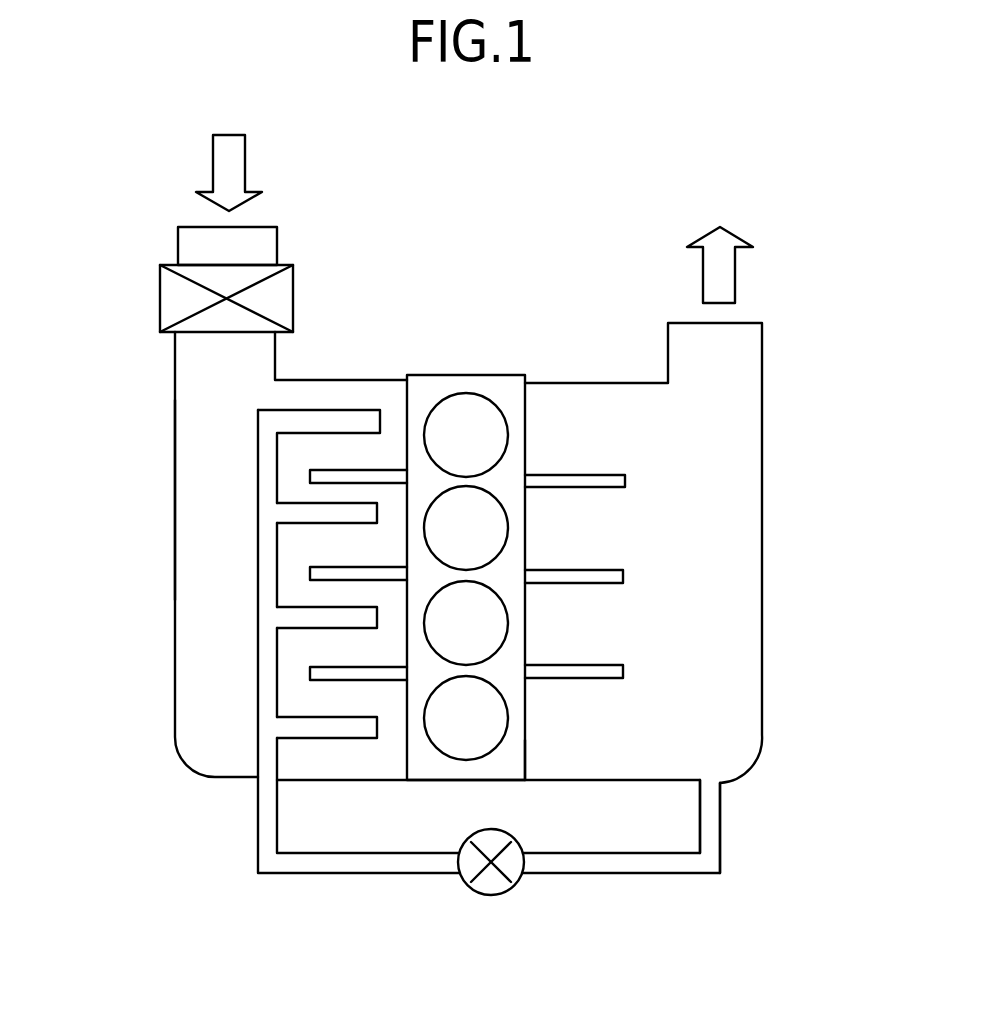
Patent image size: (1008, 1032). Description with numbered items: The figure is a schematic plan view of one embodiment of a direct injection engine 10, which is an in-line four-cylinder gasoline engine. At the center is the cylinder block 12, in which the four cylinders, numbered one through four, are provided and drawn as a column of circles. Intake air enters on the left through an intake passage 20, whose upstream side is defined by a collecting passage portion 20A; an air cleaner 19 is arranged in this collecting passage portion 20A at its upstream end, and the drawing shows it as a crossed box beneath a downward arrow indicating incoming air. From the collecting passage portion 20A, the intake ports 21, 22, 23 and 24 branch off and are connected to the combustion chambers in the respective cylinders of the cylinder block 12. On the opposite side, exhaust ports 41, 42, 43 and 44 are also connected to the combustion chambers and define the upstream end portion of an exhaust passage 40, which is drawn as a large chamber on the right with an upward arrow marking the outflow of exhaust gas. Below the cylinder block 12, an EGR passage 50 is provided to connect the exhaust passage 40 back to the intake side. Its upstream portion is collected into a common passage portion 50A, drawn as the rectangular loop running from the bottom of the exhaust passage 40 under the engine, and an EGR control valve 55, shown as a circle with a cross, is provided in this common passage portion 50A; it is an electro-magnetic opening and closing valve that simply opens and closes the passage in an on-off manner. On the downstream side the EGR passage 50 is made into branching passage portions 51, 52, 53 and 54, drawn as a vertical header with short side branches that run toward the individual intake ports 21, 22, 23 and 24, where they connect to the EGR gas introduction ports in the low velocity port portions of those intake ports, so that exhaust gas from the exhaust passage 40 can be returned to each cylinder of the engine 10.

The direct injection engine 10 is at (453, 269).
The cylinder block 12 is at (468, 379).
The air cleaner 19 is at (162, 296).
The intake passage 20 is at (174, 566).
The collecting passage portion 20A is at (190, 489).
The intake port 21 is at (318, 397).
The intake port 22 is at (317, 549).
The intake port 23 is at (317, 651).
The intake port 24 is at (315, 763).
The exhaust passage 40 is at (766, 556).
The exhaust port 41 is at (598, 460).
The exhaust port 42 is at (598, 540).
The exhaust port 43 is at (598, 643).
The exhaust port 44 is at (598, 755).
The EGR passage 50 is at (612, 874).
The common passage portion 50A is at (712, 828).
The branching passage portion 51 is at (370, 420).
The branching passage portion 52 is at (313, 509).
The branching passage portion 53 is at (315, 609).
The branching passage portion 54 is at (311, 723).
The EGR control valve 55 is at (488, 893).